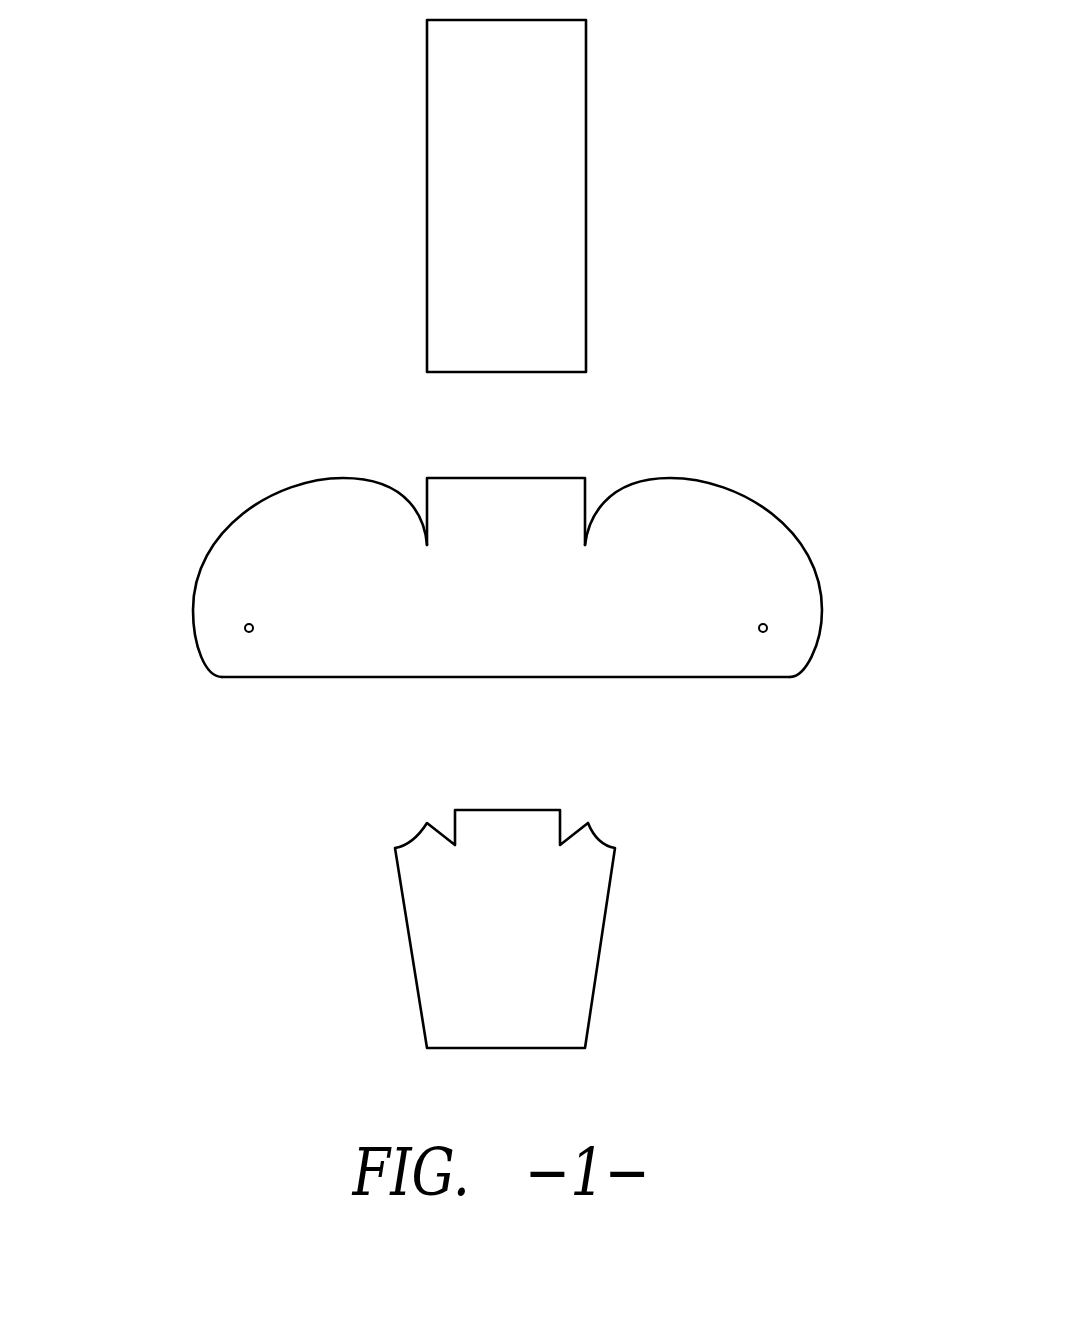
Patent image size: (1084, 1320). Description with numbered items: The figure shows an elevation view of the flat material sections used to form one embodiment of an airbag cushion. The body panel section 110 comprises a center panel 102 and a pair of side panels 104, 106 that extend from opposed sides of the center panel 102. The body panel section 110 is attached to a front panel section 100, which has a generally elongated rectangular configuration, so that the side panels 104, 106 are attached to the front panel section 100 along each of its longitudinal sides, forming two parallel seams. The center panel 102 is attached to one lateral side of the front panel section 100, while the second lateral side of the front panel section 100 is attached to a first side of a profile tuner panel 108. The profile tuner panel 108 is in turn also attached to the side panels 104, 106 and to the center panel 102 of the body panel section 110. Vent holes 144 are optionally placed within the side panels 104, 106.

The front panel section 100 is at (562, 82).
The center panel 102 is at (545, 492).
The side panel 104 is at (727, 515).
The side panel 106 is at (285, 515).
The profile tuner panel 108 is at (583, 917).
The body panel section 110 is at (628, 677).
The vent holes 144 is at (249, 628).